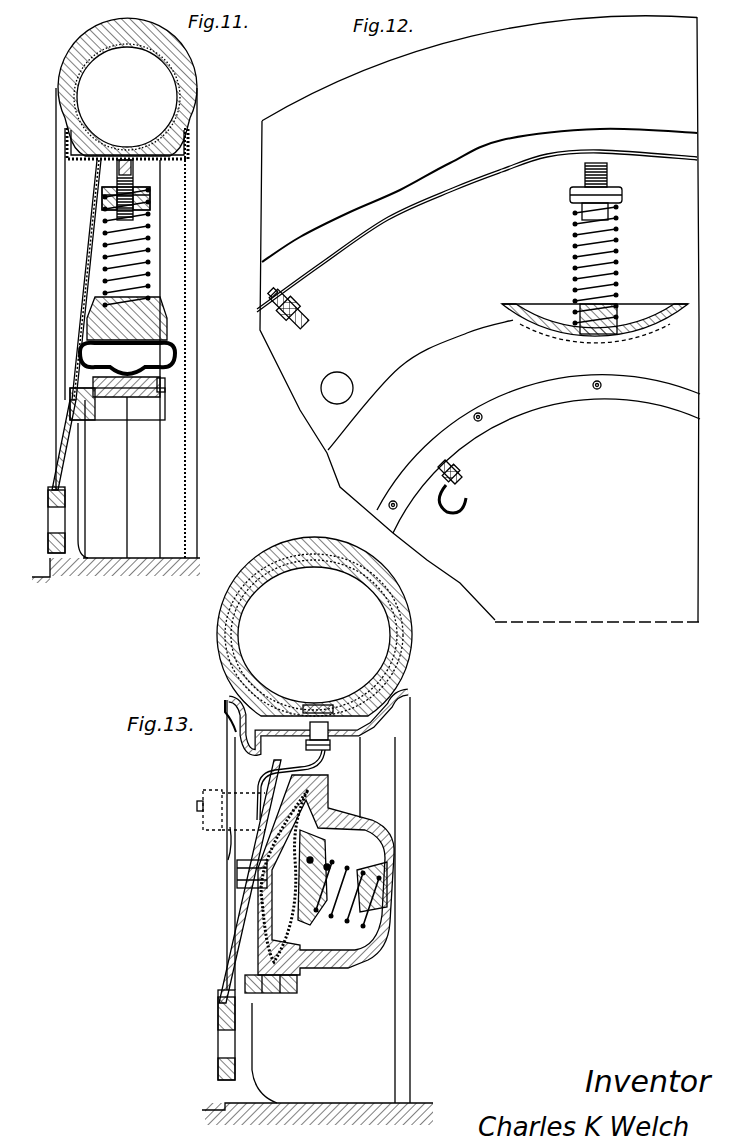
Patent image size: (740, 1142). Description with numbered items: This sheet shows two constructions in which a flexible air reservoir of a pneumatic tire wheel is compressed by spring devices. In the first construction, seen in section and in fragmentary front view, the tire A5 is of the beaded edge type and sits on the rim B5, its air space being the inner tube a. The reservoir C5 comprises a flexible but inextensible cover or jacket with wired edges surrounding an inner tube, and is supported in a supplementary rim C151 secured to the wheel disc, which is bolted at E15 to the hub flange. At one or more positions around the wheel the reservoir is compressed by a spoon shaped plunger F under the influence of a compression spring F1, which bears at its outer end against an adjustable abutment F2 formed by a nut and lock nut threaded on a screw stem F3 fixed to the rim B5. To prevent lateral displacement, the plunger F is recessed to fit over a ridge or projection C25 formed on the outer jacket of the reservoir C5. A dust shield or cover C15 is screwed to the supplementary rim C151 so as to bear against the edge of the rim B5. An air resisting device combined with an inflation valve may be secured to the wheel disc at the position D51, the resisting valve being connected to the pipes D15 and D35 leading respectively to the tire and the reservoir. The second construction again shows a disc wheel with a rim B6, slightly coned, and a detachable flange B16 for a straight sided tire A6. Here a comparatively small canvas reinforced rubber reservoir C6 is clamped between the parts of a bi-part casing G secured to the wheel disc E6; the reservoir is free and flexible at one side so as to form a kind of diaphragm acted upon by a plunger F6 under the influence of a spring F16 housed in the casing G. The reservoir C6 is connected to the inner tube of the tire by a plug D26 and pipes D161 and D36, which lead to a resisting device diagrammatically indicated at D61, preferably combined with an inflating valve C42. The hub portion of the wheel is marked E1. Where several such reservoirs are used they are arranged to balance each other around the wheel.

In FIG. 11, the tire A5 is at (66, 100).
In FIG. 12, the tire A5 is at (479, 68).
In FIG. 11, the inner tube a is at (82, 147).
In FIG. 13, the inner tube a is at (390, 637).
In FIG. 11, the rim B5 is at (110, 157).
In FIG. 12, the rim B5 is at (487, 151).
In FIG. 11, the reservoir C5 is at (165, 328).
In FIG. 12, the reservoir C5 is at (463, 343).
In FIG. 11, the dust shield or cover C15 is at (187, 265).
In FIG. 11, the ridge or projection C25 is at (100, 352).
In FIG. 11, the bolting of wheel disc to hub flange E15 is at (84, 276).
In FIG. 11, the spoon shaped plunger F is at (160, 302).
In FIG. 12, the spoon shaped plunger F is at (540, 307).
In FIG. 11, the compression spring F1 is at (140, 296).
In FIG. 12, the compression spring F1 is at (618, 262).
In FIG. 11, the adjustable abutment F2 is at (150, 196).
In FIG. 12, the adjustable abutment F2 is at (572, 197).
In FIG. 11, the screw stem F3 is at (133, 178).
In FIG. 12, the screw stem F3 is at (610, 172).
In FIG. 12, the pipe D15 is at (308, 320).
In FIG. 12, the position of air resisting device D51 is at (343, 373).
In FIG. 12, the pipe D35 is at (467, 505).
In FIG. 12, the supplementary rim C151 is at (632, 390).
In FIG. 13, the straight sided tire A6 is at (402, 640).
In FIG. 13, the rim B6 is at (410, 692).
In FIG. 13, the detachable flange B16 is at (226, 699).
In FIG. 13, the plug D26 is at (320, 704).
In FIG. 13, the pipe D161 is at (255, 772).
In FIG. 13, the inflating valve C42 is at (217, 809).
In FIG. 13, the resisting device D61 is at (204, 844).
In FIG. 13, the pipe D36 is at (238, 866).
In FIG. 13, the wheel disc E6 is at (248, 904).
In FIG. 13, the rubber container or reservoir C6 is at (275, 922).
In FIG. 13, the plunger F6 is at (384, 832).
In FIG. 13, the spring F16 is at (372, 872).
In FIG. 13, the bi-part casing G is at (360, 963).
In FIG. 13, the hub E1 is at (247, 1043).